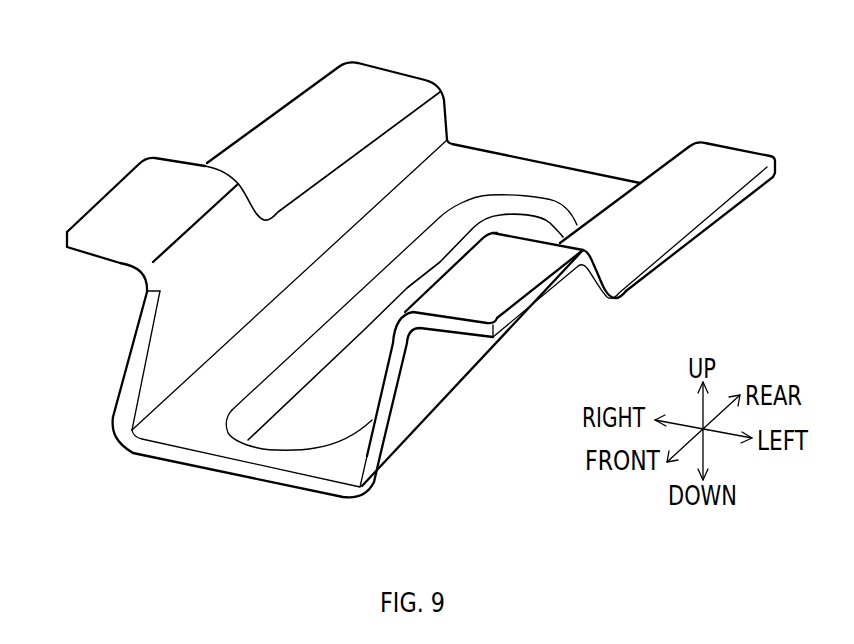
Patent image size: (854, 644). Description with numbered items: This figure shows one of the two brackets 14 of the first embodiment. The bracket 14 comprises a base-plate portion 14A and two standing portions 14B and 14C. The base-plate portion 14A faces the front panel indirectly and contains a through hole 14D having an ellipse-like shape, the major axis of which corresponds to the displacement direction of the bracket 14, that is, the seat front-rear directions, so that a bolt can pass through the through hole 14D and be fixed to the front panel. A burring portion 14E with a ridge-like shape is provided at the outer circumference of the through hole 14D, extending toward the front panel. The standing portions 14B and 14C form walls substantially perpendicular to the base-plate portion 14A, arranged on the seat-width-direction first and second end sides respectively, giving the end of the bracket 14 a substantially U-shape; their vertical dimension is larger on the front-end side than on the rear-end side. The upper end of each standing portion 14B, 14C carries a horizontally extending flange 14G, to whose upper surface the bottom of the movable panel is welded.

The bracket 14 is at (580, 100).
The base-plate portion 14A is at (187, 432).
The standing portion 14B is at (134, 348).
The standing portion 14C is at (430, 408).
The through hole 14D is at (302, 430).
The burring portion 14E is at (343, 337).
The flange 14G is at (122, 197).